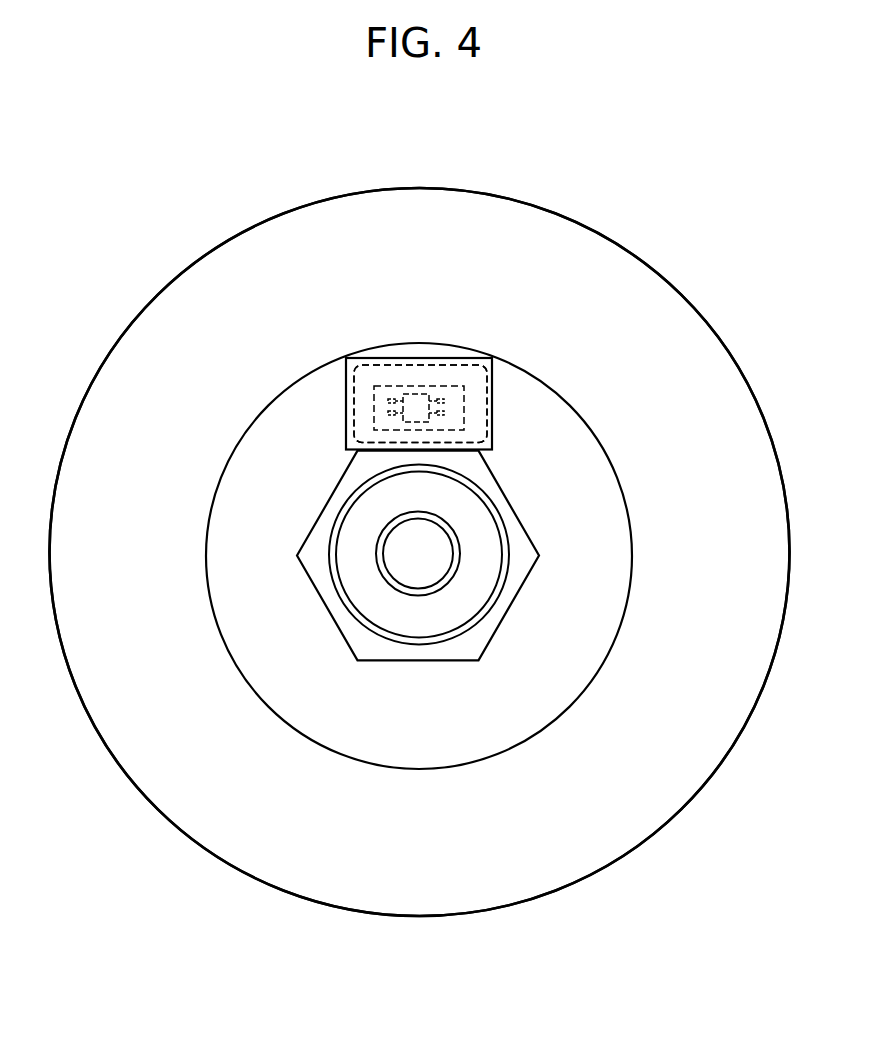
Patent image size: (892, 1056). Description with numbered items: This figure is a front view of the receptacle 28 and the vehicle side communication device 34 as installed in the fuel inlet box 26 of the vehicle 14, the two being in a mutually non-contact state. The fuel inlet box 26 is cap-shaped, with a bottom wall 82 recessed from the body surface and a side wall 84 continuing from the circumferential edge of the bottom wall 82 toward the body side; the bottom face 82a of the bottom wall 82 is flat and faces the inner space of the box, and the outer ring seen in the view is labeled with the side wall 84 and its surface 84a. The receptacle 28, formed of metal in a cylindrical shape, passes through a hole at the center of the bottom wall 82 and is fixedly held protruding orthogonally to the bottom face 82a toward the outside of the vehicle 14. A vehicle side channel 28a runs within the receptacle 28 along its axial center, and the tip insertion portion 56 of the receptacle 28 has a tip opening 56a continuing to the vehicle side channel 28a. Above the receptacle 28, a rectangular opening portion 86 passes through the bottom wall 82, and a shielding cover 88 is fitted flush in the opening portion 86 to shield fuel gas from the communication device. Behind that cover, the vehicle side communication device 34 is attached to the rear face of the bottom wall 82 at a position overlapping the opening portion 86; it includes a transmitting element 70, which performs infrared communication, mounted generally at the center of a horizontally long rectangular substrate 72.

The vehicle 14 is at (513, 99).
The fuel inlet box 26 is at (533, 198).
The receptacle 28 is at (501, 623).
The vehicle side channel 28a is at (430, 537).
The vehicle side communication device 34 is at (415, 353).
The tip insertion portion 56 is at (369, 581).
The tip opening 56a is at (399, 578).
The transmitting element 70 is at (372, 404).
The substrate 72 is at (365, 423).
The bottom wall 82 is at (468, 556).
The bottom face 82a is at (587, 602).
The side wall 84 is at (420, 552).
The surface of first member 84a is at (633, 827).
The opening portion 86 is at (490, 378).
The shielding cover 88 is at (372, 373).